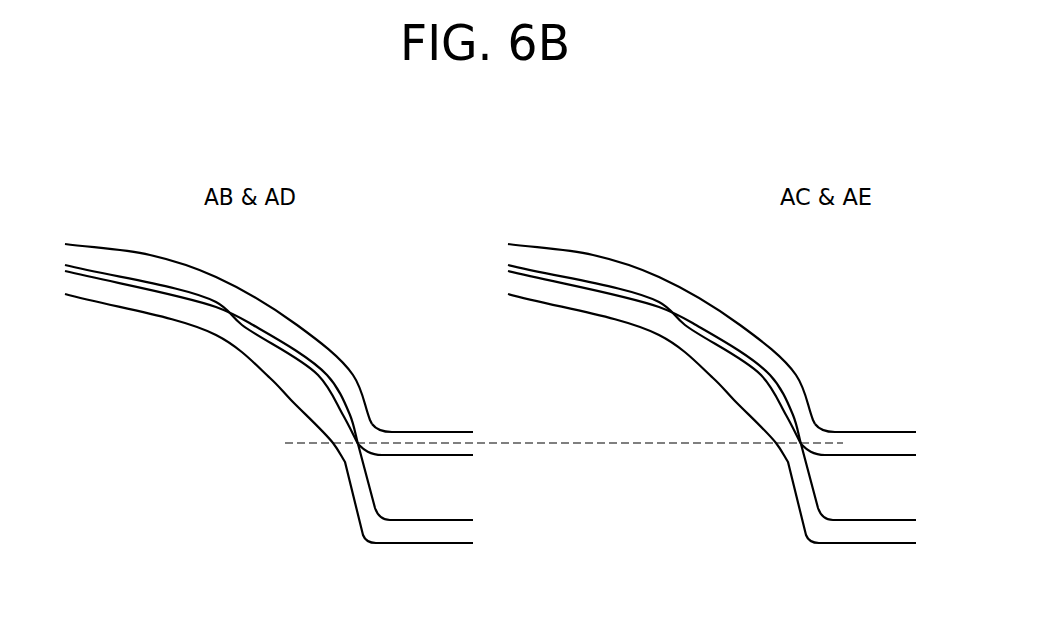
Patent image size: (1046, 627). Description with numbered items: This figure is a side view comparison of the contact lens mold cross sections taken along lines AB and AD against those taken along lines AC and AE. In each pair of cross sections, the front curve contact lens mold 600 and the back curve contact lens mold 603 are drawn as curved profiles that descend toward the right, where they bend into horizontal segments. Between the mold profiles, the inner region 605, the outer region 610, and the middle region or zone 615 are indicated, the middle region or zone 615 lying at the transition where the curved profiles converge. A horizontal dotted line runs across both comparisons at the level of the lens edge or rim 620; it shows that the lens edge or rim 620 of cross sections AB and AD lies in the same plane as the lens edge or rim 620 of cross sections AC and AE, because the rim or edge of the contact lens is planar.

The front curve contact lens mold 600 is at (250, 299).
The back curve contact lens mold 603 is at (193, 314).
The inner region 605 is at (310, 366).
The outer region 610 is at (413, 459).
The middle region or zone 615 is at (368, 450).
The lens edge or rim 620 is at (378, 426).